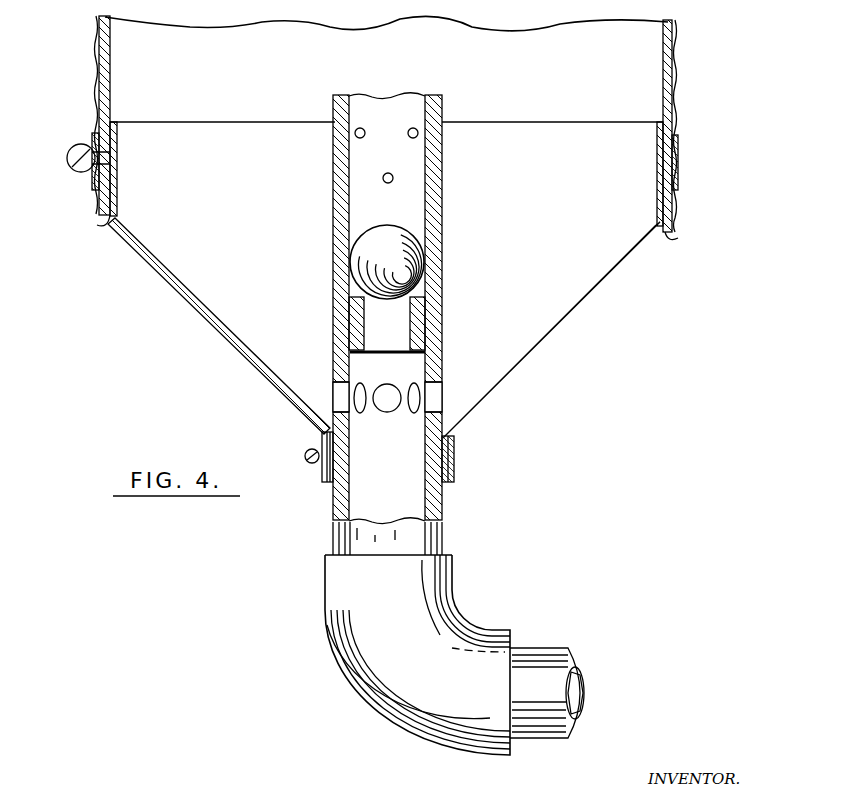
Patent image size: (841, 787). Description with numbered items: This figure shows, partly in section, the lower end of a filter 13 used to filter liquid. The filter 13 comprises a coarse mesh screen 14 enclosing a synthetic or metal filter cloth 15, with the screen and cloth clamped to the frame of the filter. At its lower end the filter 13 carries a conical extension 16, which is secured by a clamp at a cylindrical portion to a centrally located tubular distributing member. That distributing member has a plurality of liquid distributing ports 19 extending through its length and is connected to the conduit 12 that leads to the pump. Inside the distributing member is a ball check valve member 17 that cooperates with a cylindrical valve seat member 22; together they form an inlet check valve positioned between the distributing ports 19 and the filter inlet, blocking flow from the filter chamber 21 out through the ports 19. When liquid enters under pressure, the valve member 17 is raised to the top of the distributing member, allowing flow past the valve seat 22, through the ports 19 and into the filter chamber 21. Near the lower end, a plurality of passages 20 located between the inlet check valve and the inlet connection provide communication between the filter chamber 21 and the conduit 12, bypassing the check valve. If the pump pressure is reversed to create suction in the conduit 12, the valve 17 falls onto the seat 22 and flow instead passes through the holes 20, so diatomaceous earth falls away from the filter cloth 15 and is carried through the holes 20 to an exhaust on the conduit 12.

The conduit 12 is at (540, 658).
The filter 13 is at (409, 302).
The coarse mesh screen 14 is at (675, 91).
The filter cloth 15 is at (672, 233).
The conical extension 16 is at (572, 323).
The ball check valve member 17 is at (388, 240).
The liquid distributing ports 19 is at (388, 173).
The passages 20 is at (400, 386).
The filter chamber 21 is at (576, 108).
The cylindrical valve seat member 22 is at (362, 307).